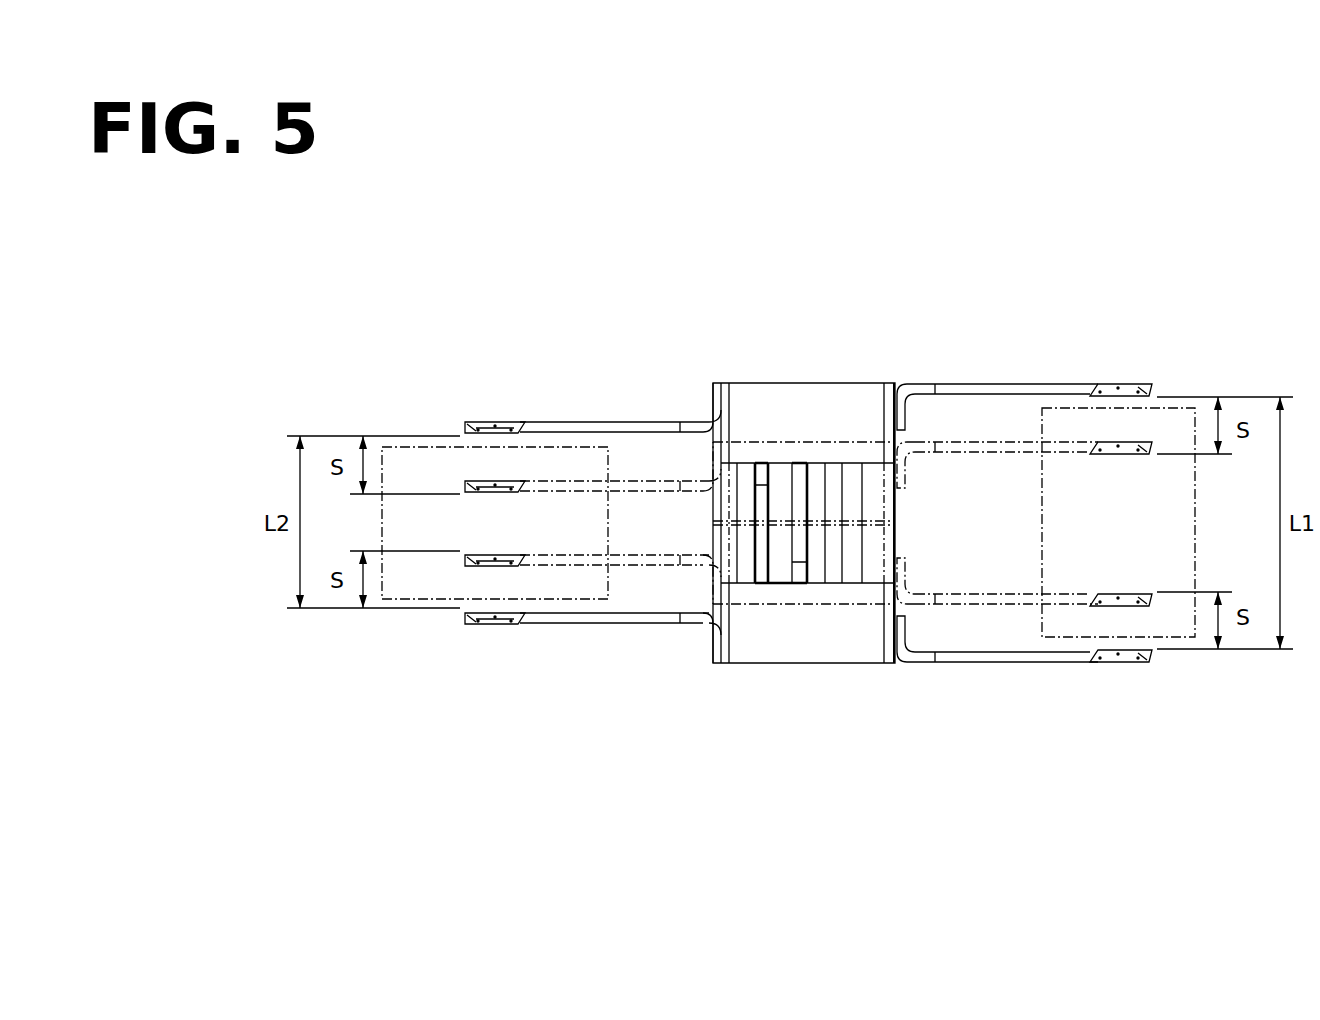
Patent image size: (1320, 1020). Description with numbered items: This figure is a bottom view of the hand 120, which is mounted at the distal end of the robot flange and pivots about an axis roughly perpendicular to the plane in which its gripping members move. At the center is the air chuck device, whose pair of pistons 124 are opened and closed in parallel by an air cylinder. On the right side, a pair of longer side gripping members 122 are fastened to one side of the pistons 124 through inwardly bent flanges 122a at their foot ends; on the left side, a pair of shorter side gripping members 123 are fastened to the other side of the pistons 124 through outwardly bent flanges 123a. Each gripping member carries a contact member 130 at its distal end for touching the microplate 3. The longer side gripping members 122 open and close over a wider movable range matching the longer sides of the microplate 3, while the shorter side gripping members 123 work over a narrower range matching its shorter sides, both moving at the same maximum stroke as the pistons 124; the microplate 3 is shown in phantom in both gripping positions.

The microplate 3 is at (378, 447).
The hand 120 is at (793, 312).
The longer side gripping member 122 is at (1010, 394).
The flange 122a is at (905, 383).
The shorter side gripping member 123 is at (662, 432).
The flange 123a is at (712, 392).
The piston 124 is at (833, 453).
The contact member 130 is at (483, 422).